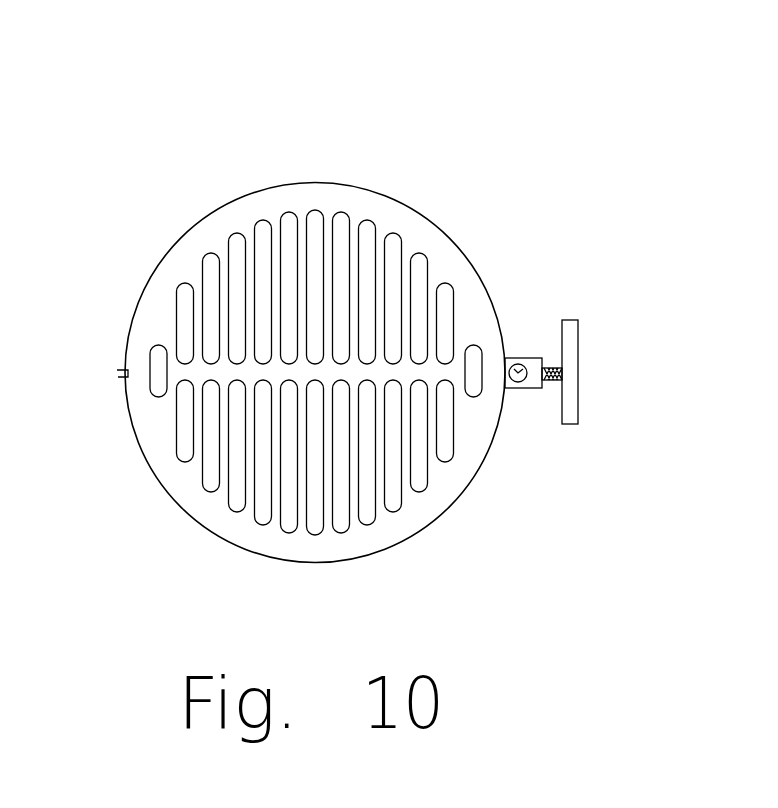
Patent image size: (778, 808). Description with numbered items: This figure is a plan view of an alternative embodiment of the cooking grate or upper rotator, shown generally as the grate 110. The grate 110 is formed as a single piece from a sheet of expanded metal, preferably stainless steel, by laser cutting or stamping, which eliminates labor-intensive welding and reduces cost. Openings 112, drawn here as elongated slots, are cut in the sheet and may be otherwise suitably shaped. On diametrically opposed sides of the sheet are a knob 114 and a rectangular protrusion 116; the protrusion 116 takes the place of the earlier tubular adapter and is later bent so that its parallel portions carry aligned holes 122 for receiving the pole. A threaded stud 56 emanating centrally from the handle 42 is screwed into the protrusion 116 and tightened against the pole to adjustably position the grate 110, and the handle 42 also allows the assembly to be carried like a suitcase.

The grate 110 is at (445, 150).
The openings 112 is at (289, 225).
The knob 114 is at (120, 376).
The rectangular protrusion 116 is at (524, 358).
The threaded stud 56 is at (546, 365).
The holes 122 is at (511, 390).
The handle 42 is at (573, 405).